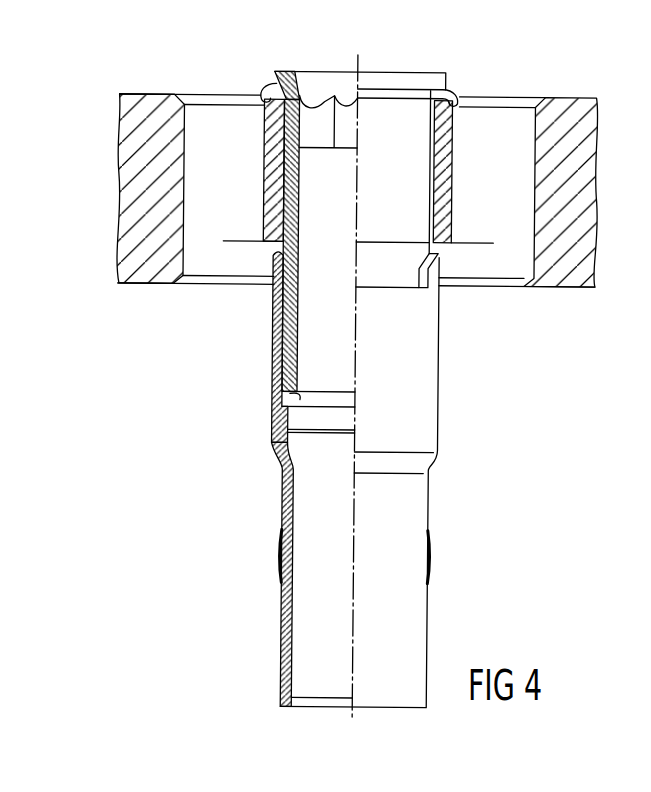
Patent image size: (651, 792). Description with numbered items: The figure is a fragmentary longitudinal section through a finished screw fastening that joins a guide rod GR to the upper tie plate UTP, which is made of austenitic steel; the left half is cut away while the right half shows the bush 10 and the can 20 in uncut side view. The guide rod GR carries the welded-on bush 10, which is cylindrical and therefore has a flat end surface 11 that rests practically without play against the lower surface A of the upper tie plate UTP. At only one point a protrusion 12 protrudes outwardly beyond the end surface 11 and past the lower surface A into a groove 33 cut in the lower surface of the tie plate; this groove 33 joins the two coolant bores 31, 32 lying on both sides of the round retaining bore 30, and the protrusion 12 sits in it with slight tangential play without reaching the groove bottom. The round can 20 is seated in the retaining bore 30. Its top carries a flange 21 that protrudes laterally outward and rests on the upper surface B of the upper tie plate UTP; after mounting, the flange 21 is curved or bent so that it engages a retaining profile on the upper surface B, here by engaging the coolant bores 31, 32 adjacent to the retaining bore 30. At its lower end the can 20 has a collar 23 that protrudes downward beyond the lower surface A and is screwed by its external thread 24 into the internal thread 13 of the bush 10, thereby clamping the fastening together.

The bush 10 is at (438, 410).
The end surface 11 is at (387, 283).
The protrusion 12 is at (434, 268).
The internal thread 13 is at (272, 323).
The can 20 is at (336, 72).
The flange 21 is at (407, 90).
The collar 23 is at (282, 406).
The external thread 24 is at (282, 353).
The retaining bore 30 is at (456, 140).
The coolant bore 31 is at (203, 286).
The coolant bore 32 is at (511, 278).
The groove 33 is at (467, 258).
The upper tie plate UTP is at (124, 258).
The lower surface A is at (142, 286).
The upper surface B is at (162, 93).
The guide rod GR is at (429, 505).